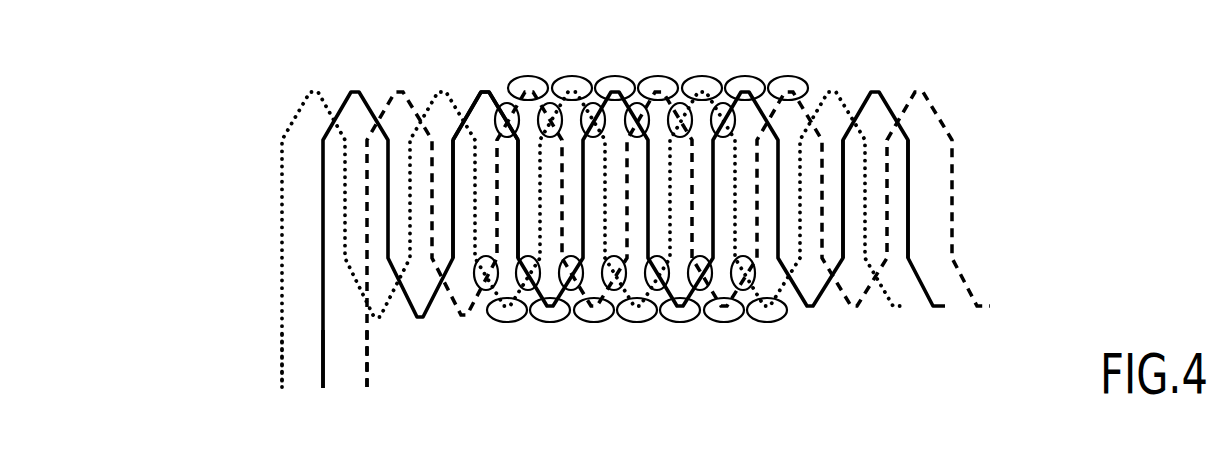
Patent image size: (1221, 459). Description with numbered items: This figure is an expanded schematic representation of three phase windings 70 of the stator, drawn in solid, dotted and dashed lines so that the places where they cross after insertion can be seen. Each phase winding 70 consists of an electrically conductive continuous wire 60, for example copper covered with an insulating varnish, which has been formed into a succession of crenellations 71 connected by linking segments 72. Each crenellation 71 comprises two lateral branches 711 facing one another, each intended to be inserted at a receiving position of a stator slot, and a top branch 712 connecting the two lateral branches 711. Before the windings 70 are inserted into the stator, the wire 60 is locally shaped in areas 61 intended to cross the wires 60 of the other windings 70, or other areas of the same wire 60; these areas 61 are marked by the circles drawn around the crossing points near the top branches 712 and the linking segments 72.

The electrically conductive continuous wire 60 is at (367, 182).
The phase winding 70 is at (280, 278).
The top branch 712 is at (475, 100).
The lateral branches 711 is at (458, 212).
The areas of local shaping 61 is at (685, 319).
The linking segments 72 is at (786, 320).
The crenellations 71 is at (928, 207).